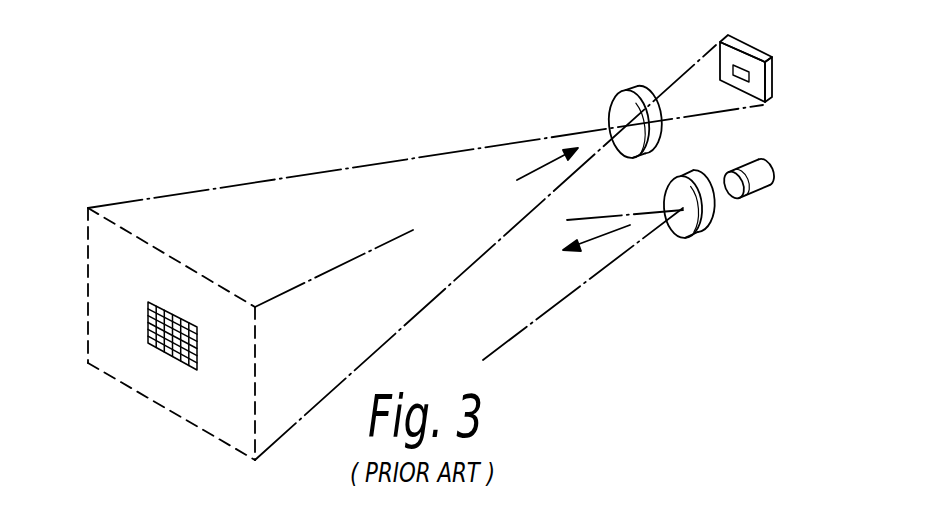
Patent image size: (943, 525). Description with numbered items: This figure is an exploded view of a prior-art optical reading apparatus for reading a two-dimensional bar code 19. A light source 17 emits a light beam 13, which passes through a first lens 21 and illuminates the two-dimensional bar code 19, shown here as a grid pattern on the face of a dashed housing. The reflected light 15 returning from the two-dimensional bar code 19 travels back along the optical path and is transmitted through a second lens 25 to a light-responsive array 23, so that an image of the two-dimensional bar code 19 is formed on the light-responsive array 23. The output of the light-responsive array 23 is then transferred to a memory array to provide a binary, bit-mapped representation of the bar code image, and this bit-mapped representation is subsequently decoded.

The light beam 13 is at (612, 236).
The reflected light 15 is at (515, 182).
The light source 17 is at (760, 195).
The two-dimensional bar code 19 is at (197, 352).
The first lens 21 is at (688, 232).
The light-responsive array 23 is at (753, 44).
The second lens 25 is at (617, 108).